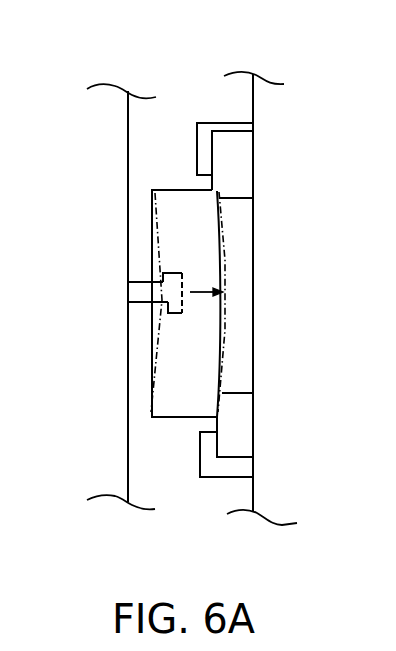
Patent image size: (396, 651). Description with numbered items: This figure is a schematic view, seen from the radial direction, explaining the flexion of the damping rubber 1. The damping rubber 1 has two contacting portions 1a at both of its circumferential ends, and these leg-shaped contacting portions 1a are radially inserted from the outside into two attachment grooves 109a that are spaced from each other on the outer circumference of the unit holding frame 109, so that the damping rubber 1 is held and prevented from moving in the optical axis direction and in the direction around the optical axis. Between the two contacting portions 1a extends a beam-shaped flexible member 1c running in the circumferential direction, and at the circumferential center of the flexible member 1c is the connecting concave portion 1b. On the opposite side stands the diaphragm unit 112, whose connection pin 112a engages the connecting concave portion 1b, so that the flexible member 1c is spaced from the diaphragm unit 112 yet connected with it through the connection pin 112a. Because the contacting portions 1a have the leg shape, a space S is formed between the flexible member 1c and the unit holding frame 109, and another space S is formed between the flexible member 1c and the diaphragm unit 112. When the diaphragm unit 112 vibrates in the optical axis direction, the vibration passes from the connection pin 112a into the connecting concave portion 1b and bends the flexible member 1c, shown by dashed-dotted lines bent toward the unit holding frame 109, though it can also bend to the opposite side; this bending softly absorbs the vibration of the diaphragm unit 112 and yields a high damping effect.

The damping rubber 1 is at (175, 190).
The contacting portion 1a is at (232, 157).
The connecting concave portion 1b is at (181, 313).
The flexible member 1c is at (216, 369).
The 3b-th unit holding frame 109 is at (283, 268).
The attachment groove 109a is at (203, 123).
The diaphragm unit 112 is at (105, 222).
The connection pin 112a is at (150, 302).
The space S is at (140, 212).